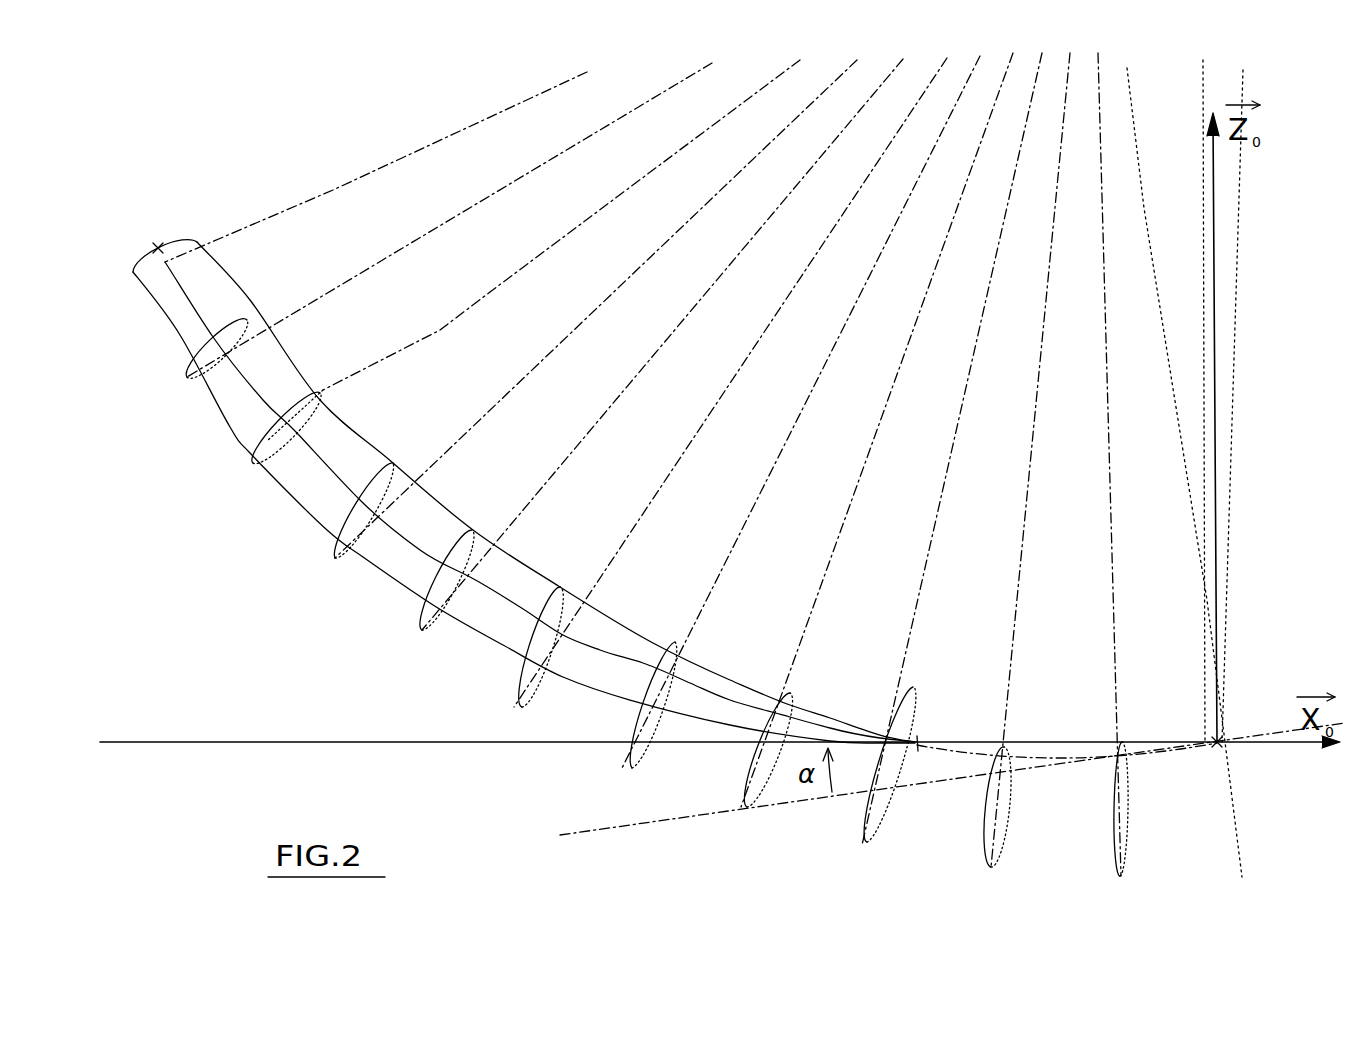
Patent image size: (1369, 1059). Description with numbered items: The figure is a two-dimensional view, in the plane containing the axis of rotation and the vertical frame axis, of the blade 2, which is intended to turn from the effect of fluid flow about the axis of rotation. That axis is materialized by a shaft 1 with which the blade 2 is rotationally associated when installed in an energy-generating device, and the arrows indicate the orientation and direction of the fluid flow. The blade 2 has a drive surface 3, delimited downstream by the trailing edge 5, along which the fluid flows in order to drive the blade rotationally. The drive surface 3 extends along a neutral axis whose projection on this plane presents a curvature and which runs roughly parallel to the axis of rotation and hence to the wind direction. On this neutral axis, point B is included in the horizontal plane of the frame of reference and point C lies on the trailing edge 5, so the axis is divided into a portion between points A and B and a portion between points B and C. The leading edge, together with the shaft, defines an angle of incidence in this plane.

The shaft 1 is at (1030, 742).
The blade 2 is at (458, 468).
The drive surface 3 is at (508, 577).
The trailing edge 5 is at (181, 238).
The point A is at (1221, 740).
The point B is at (917, 738).
The point C is at (158, 246).